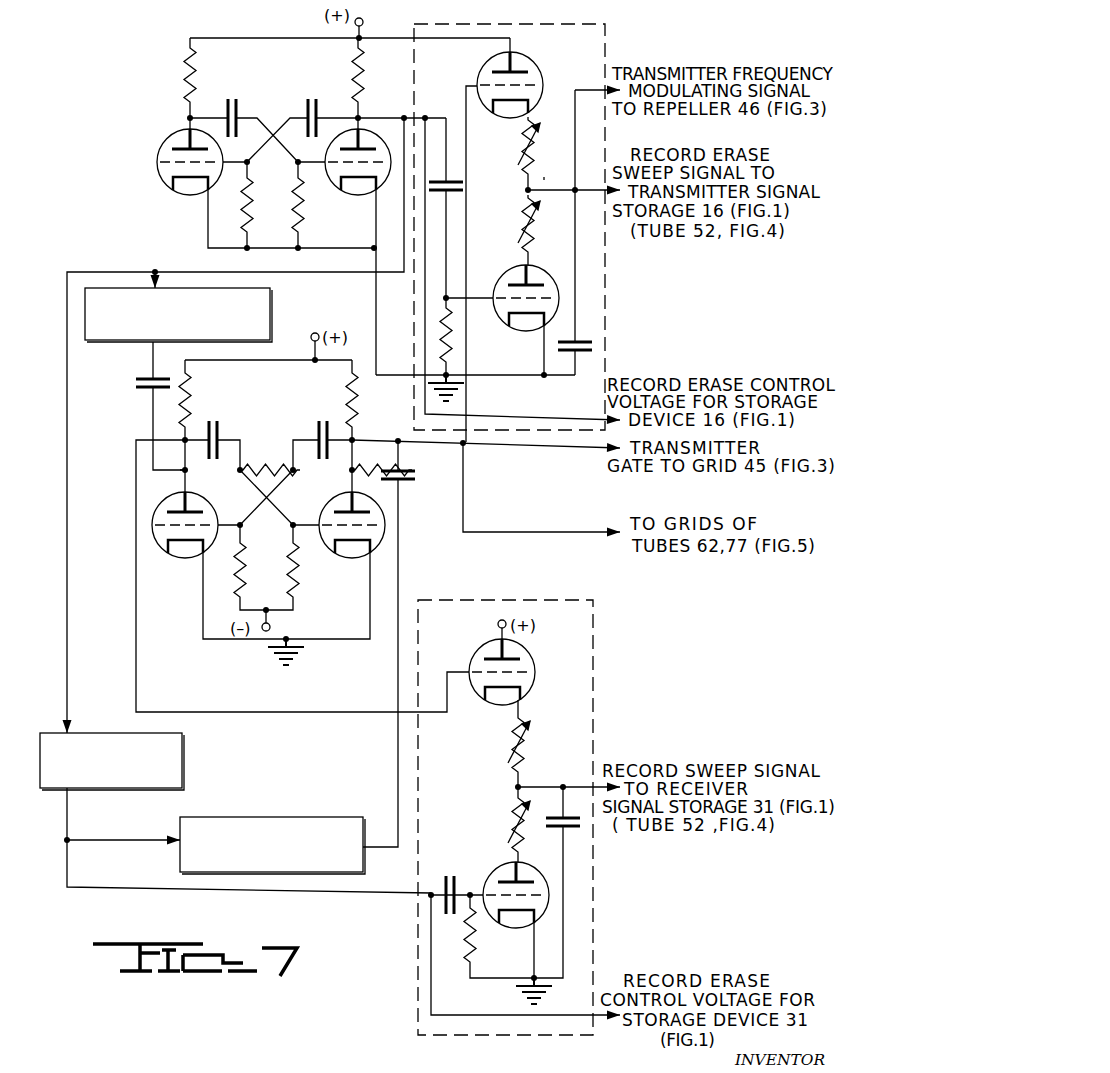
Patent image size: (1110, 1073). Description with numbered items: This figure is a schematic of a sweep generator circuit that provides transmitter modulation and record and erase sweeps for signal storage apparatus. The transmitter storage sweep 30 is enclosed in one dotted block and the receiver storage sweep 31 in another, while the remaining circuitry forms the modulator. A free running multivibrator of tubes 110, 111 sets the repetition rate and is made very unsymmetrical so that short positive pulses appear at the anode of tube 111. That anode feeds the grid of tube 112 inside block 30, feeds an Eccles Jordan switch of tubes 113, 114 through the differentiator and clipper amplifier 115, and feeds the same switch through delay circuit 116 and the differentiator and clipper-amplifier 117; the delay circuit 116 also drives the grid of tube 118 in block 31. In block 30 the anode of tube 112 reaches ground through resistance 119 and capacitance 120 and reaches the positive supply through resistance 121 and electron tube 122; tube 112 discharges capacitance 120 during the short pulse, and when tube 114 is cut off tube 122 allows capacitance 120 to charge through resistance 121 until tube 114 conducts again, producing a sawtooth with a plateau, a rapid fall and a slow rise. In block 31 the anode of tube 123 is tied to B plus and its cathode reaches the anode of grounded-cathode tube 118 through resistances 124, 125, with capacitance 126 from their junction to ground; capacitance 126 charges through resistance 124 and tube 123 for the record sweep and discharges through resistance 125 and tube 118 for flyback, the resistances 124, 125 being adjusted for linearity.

The transmitter storage sweep 30 is at (605, 52).
The receiver storage sweep 31 is at (597, 630).
The tube 110 is at (163, 178).
The tube 111 is at (333, 183).
The tube 112 is at (497, 318).
The tube 113 is at (162, 552).
The tube 114 is at (325, 553).
The differentiator and clipper amplifier 115 is at (270, 318).
The delay circuit 116 is at (182, 760).
The differentiator and clipper-amplifier 117 is at (230, 817).
The tube 118 is at (498, 918).
The resistance 119 is at (527, 228).
The capacitance 120 is at (596, 336).
The resistance 121 is at (522, 150).
The electron tube 122 is at (553, 58).
The tube 123 is at (472, 653).
The resistance 124 is at (512, 744).
The resistance 125 is at (512, 822).
The capacitance 126 is at (556, 826).